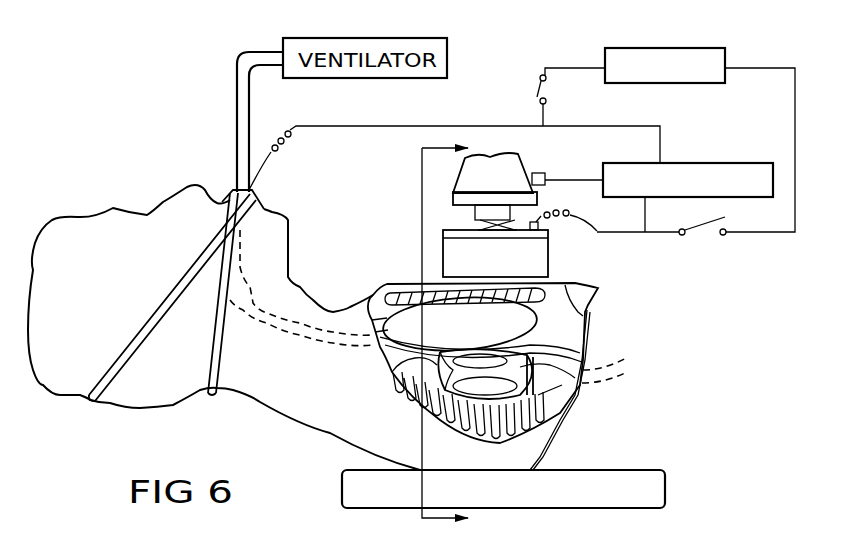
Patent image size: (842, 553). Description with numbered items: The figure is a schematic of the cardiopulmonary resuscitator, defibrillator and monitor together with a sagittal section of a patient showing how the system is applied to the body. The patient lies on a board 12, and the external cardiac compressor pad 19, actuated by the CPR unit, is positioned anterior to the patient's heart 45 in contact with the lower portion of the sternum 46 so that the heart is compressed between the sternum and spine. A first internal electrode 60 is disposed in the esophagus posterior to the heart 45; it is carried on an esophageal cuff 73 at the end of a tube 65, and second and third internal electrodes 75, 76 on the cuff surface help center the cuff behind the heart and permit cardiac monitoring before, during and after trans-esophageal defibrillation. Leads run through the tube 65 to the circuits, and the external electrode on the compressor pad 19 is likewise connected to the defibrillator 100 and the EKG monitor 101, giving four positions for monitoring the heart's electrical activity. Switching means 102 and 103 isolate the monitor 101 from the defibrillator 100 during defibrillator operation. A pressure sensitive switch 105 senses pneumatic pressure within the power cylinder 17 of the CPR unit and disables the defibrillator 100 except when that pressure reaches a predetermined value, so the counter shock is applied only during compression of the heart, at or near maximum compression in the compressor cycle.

The backboard 12 is at (588, 502).
The power cylinder 17 is at (505, 184).
The external cardiac compressor pad 19 is at (412, 251).
The heart 45 is at (477, 329).
The sternum 46 is at (532, 290).
The first internal electrode 60 is at (485, 388).
The tube 65 is at (560, 380).
The esophageal cuff 73 is at (453, 370).
The second internal electrode 75 is at (437, 365).
The third internal electrode 76 is at (540, 390).
The defibrillator 100 is at (727, 197).
The EKG monitor 101 is at (659, 48).
The switching means 102 is at (540, 84).
The switching means 103 is at (700, 240).
The pressure sensitive switch 105 is at (540, 172).